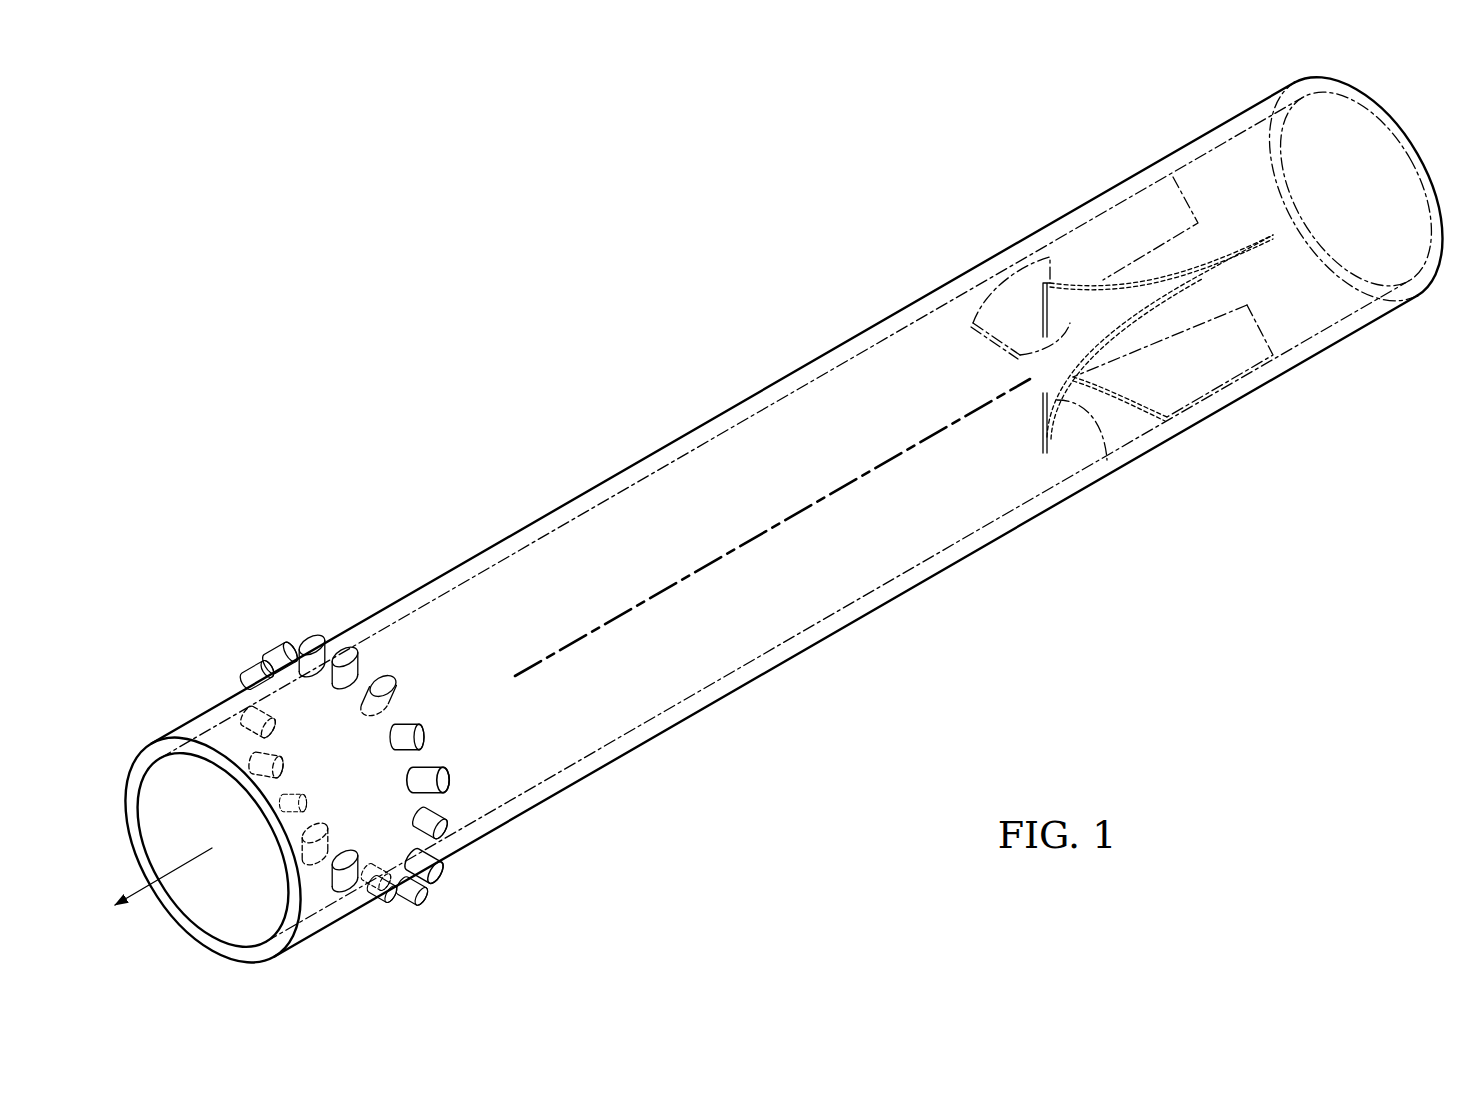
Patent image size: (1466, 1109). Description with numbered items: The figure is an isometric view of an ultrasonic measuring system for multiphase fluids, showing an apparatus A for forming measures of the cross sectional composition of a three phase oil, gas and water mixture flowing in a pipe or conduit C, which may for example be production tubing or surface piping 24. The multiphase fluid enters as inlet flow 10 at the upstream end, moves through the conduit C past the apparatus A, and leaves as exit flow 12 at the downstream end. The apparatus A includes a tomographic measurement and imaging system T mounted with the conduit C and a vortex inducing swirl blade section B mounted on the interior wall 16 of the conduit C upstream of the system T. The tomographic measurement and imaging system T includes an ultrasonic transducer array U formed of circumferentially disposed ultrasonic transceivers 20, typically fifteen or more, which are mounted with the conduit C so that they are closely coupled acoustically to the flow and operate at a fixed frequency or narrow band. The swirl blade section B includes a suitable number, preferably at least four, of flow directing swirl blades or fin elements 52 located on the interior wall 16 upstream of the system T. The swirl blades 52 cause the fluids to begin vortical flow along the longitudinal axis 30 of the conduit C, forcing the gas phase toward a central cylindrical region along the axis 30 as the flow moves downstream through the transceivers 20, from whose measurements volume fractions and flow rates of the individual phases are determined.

The inlet flow 10 is at (1358, 186).
The exit flow 12 is at (183, 863).
The interior wall 16 is at (677, 688).
The ultrasonic transceivers 20 is at (275, 647).
The production tubing or surface piping 24 is at (657, 448).
The longitudinal axis 30 is at (675, 580).
The swirl blades 52 is at (1138, 210).
The apparatus A is at (197, 600).
The swirl blade section B is at (1078, 262).
The conduit C is at (958, 565).
The tomographic measurement and imaging system T is at (358, 633).
The ultrasonic transducer array U is at (302, 623).